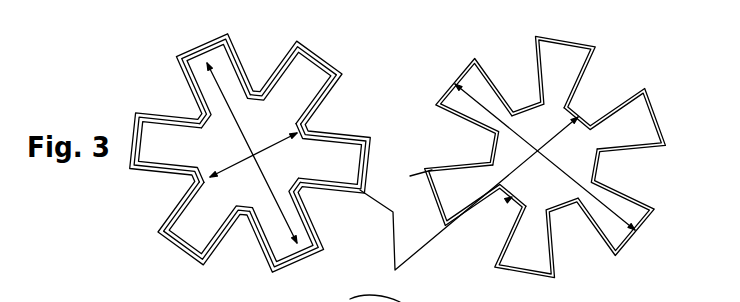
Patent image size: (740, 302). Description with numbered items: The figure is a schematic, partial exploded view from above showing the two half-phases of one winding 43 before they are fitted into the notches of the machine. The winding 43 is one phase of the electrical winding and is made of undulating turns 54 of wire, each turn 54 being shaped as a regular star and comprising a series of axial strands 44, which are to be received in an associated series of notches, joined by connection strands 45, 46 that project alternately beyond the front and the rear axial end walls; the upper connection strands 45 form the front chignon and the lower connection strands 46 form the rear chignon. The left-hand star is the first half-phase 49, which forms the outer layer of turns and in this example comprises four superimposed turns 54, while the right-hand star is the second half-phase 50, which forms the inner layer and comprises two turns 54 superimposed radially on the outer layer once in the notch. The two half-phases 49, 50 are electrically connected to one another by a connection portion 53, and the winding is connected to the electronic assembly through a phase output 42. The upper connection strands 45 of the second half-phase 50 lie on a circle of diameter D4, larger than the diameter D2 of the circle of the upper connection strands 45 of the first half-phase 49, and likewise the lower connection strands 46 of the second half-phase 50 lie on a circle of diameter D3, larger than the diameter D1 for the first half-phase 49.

The phase output 42 is at (376, 145).
The winding 43 is at (244, 168).
The axial strand 44 is at (275, 70).
The upper connection strand 45 is at (322, 58).
The lower connection strand 46 is at (322, 137).
The first half-phase 49 is at (155, 90).
The second half-phase 50 is at (613, 72).
The connection portion 53 is at (360, 196).
The turn 54 is at (640, 231).
The diameter of circle of lower connection strands of first half-phase D1 is at (233, 166).
The diameter of circle of upper connection strands of first half-phase D2 is at (253, 141).
The diameter of circle of lower connection strands of second half-phase D3 is at (520, 193).
The diameter of circle of upper connection strands of second half-phase D4 is at (538, 150).